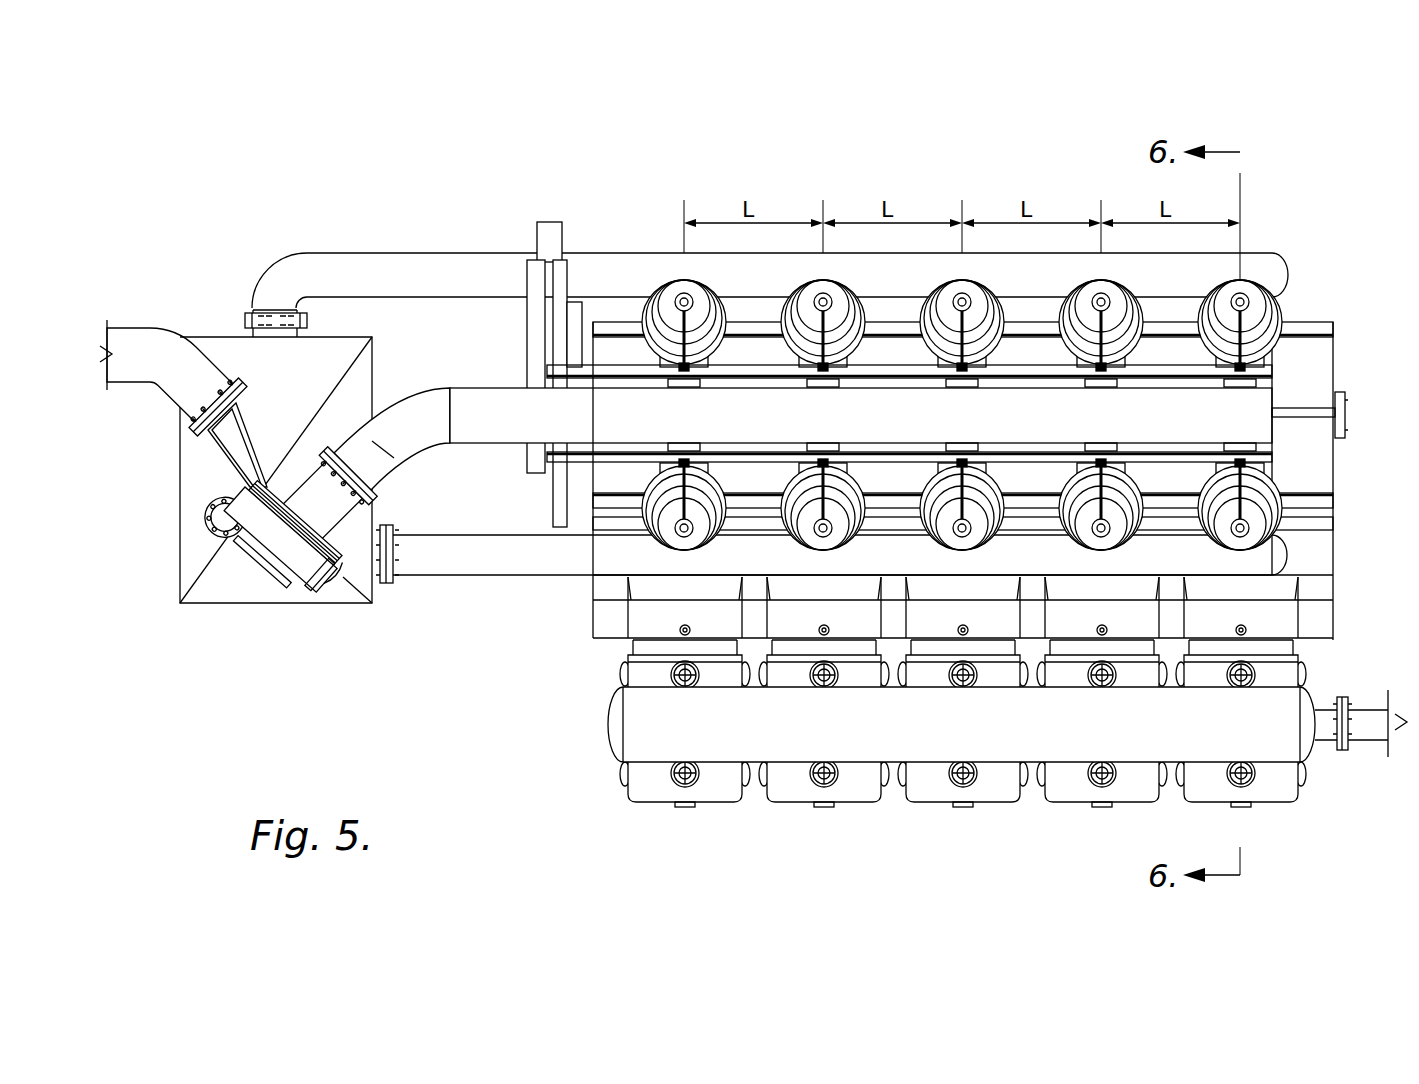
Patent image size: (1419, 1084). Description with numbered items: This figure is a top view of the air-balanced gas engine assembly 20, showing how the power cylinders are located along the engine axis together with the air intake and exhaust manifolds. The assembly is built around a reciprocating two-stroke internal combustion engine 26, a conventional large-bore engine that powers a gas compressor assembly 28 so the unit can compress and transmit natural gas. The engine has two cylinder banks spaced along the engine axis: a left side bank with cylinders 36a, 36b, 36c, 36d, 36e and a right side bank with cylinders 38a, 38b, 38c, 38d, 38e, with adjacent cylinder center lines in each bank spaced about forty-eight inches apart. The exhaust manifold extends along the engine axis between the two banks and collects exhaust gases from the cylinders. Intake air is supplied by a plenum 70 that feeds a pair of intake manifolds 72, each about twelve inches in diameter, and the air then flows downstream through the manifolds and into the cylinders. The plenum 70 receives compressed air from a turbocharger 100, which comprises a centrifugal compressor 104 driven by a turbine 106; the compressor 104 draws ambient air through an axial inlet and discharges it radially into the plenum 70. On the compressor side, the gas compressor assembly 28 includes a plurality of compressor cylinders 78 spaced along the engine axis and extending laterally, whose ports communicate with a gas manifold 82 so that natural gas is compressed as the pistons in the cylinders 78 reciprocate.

The air-balanced gas engine assembly 20 is at (1296, 208).
The reciprocating two-stroke internal combustion engine 26 is at (940, 363).
The gas compressor assembly 28 is at (967, 730).
The cylinder 36a is at (668, 533).
The cylinder 36b is at (807, 533).
The cylinder 36c is at (946, 533).
The cylinder 36d is at (1085, 533).
The cylinder 36e is at (1224, 533).
The cylinder 38a is at (668, 297).
The cylinder 38b is at (807, 297).
The cylinder 38c is at (946, 297).
The cylinder 38d is at (1085, 297).
The cylinder 38e is at (1224, 297).
The plenum 70 is at (233, 340).
The intake manifold 72 is at (487, 262).
The compressor cylinder 78 is at (715, 797).
The gas manifold 82 is at (623, 722).
The turbocharger 100 is at (298, 474).
The centrifugal compressor 104 is at (310, 580).
The turbine 106 is at (355, 520).